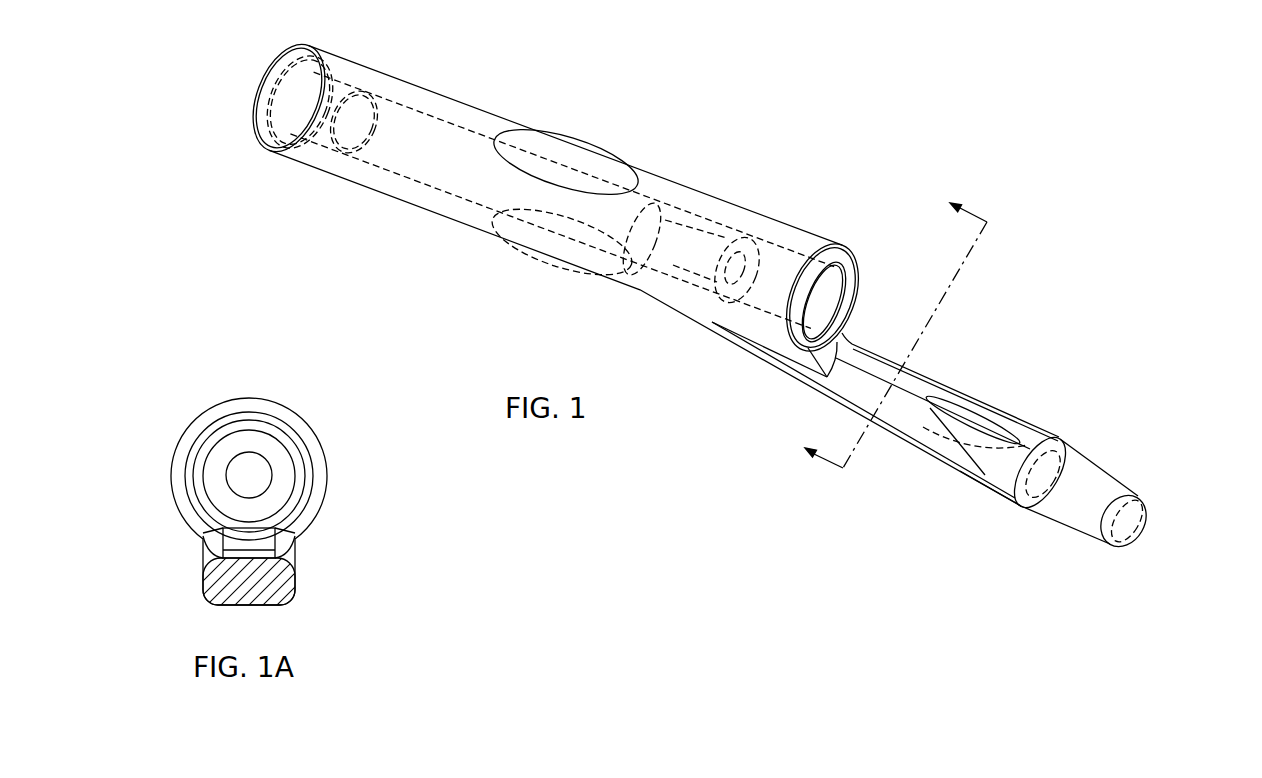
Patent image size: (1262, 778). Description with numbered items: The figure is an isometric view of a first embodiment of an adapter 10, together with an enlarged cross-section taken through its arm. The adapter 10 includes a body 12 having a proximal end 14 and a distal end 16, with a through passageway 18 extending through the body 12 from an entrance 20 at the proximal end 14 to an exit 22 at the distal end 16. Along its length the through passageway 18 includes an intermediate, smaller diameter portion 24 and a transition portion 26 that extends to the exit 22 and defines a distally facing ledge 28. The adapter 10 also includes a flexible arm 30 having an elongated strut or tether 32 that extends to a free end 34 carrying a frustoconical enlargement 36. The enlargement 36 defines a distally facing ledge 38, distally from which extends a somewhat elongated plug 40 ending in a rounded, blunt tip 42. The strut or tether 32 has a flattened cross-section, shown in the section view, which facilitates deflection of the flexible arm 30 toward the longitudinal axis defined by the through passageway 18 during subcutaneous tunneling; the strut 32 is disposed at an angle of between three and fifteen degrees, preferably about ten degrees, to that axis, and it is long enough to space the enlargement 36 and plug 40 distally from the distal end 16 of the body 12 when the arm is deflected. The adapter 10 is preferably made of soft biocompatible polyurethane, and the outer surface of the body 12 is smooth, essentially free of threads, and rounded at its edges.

In FIG. 1, the adapter 10 is at (333, 234).
In FIG. 1A, the adapter 10 is at (354, 427).
In FIG. 1, the body 12 is at (295, 174).
In FIG. 1A, the body 12 is at (165, 450).
In FIG. 1, the proximal end 14 is at (379, 62).
In FIG. 1, the distal end 16 is at (838, 233).
In FIG. 1A, the distal end 16 is at (311, 406).
In FIG. 1, the through passageway 18 is at (840, 300).
In FIG. 1A, the through passageway 18 is at (254, 460).
In FIG. 1, the entrance 20 is at (310, 83).
In FIG. 1, the exit 22 is at (836, 283).
In FIG. 1, the intermediate, smaller diameter portion 24 is at (458, 143).
In FIG. 1, the transition portion 26 is at (700, 233).
In FIG. 1, the distally facing ledge 28 is at (772, 242).
In FIG. 1A, the distally facing ledge 28 is at (226, 444).
In FIG. 1, the flexible arm 30 is at (818, 397).
In FIG. 1A, the flexible arm 30 is at (337, 559).
In FIG. 1, the strut or tether 32 is at (922, 395).
In FIG. 1A, the strut or tether 32 is at (304, 603).
In FIG. 1, the free end 34 is at (1120, 472).
In FIG. 1, the frustoconical enlargement 36 is at (988, 506).
In FIG. 1, the distally facing ledge 38 is at (1077, 430).
In FIG. 1, the plug 40 is at (1080, 546).
In FIG. 1, the rounded, blunt tip 42 is at (1160, 508).